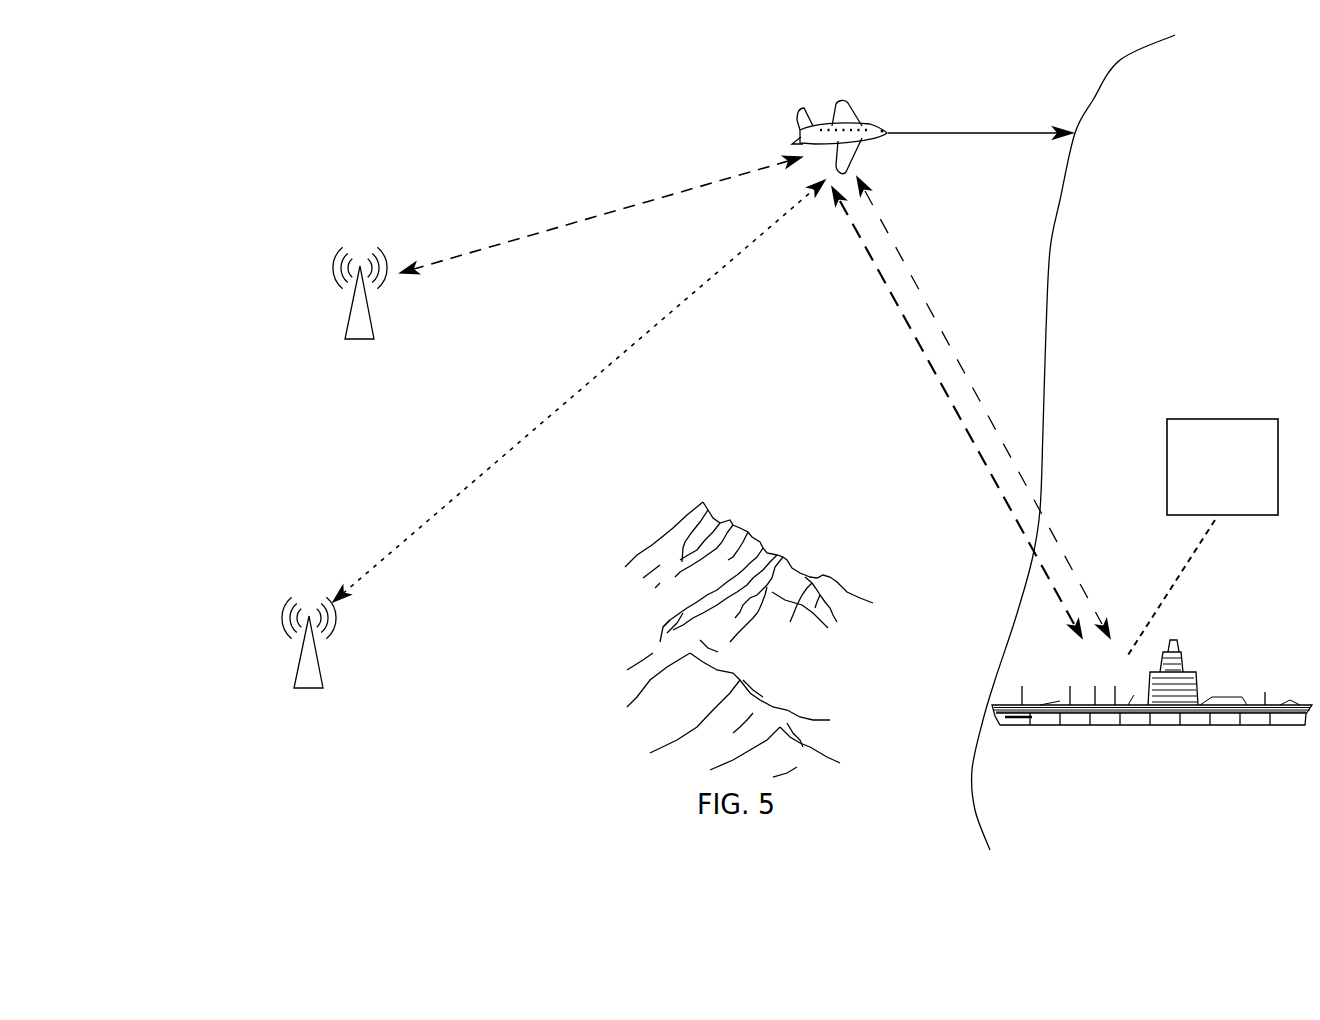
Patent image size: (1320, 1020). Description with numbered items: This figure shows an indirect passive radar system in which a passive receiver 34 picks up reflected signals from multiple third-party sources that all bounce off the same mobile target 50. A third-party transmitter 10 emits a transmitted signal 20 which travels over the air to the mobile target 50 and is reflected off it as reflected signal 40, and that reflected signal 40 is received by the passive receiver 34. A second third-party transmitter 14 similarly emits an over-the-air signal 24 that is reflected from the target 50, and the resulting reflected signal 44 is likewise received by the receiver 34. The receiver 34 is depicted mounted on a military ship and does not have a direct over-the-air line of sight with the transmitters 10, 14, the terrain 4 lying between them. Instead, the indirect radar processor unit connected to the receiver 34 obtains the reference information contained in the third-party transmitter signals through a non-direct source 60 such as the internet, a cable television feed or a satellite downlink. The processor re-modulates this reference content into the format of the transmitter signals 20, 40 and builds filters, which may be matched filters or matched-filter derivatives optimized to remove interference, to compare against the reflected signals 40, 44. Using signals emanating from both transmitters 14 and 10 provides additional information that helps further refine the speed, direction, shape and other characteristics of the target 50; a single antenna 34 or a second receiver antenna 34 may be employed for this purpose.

The terrain / mountain 4 is at (633, 640).
The third-party transmitter 10 is at (300, 648).
The second third-party transmitter 14 is at (352, 305).
The transmitted signal 20 is at (582, 385).
The over-the-air signal 24 is at (538, 232).
The passive receiver 34 is at (1002, 714).
The reflected signal 40 is at (943, 343).
The reflected signal 44 is at (927, 350).
The mobile target 50 is at (805, 118).
The non-direct source 60 is at (1257, 419).